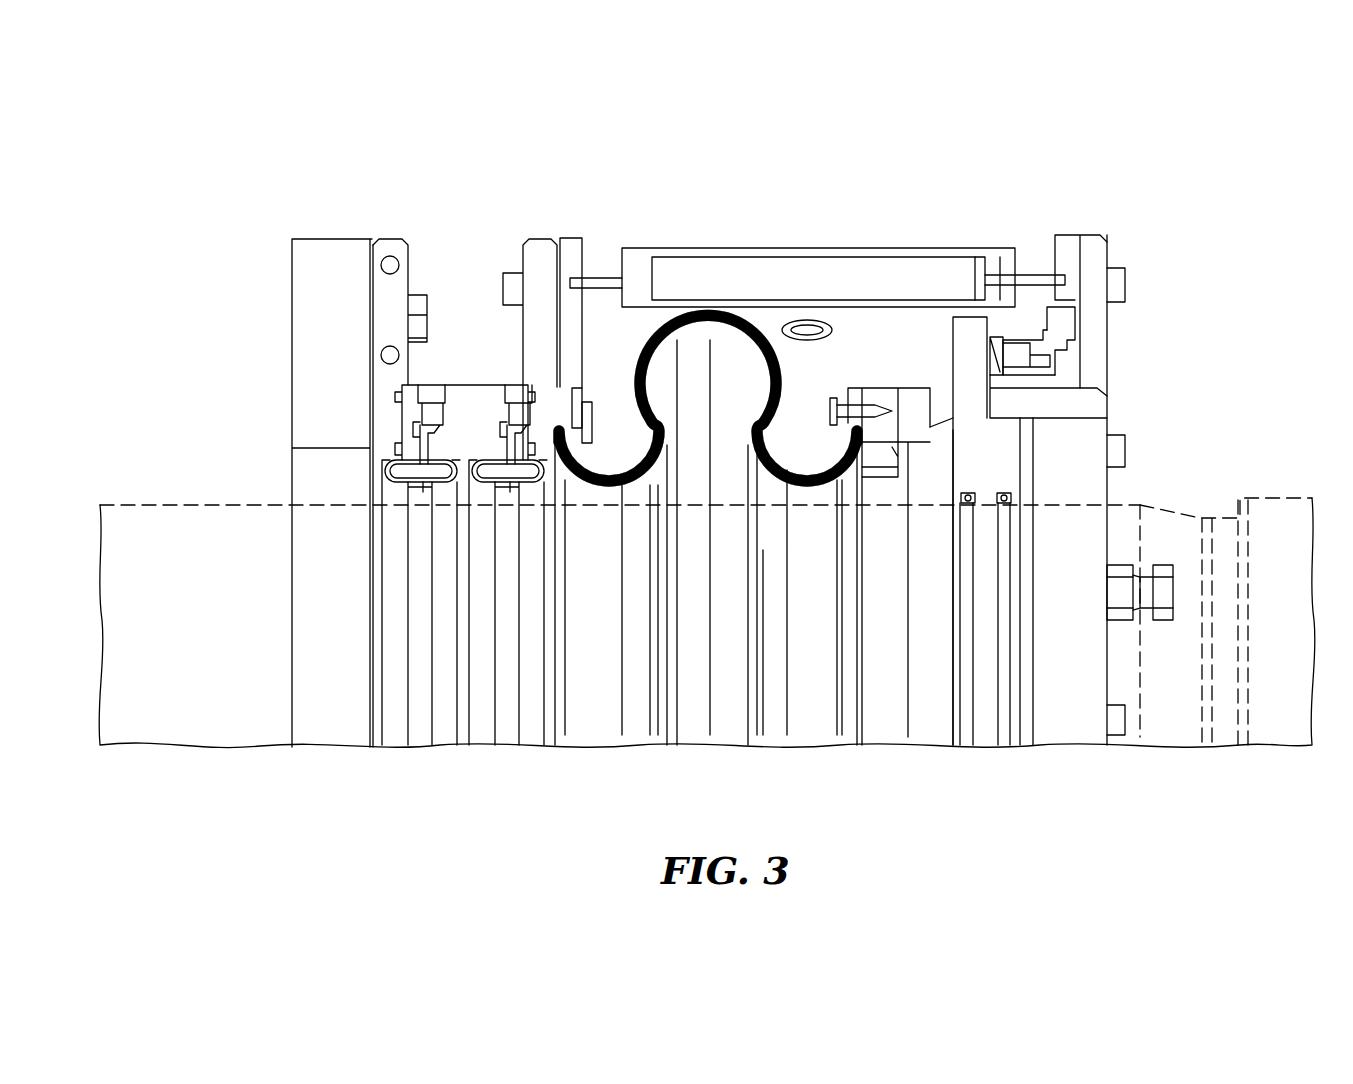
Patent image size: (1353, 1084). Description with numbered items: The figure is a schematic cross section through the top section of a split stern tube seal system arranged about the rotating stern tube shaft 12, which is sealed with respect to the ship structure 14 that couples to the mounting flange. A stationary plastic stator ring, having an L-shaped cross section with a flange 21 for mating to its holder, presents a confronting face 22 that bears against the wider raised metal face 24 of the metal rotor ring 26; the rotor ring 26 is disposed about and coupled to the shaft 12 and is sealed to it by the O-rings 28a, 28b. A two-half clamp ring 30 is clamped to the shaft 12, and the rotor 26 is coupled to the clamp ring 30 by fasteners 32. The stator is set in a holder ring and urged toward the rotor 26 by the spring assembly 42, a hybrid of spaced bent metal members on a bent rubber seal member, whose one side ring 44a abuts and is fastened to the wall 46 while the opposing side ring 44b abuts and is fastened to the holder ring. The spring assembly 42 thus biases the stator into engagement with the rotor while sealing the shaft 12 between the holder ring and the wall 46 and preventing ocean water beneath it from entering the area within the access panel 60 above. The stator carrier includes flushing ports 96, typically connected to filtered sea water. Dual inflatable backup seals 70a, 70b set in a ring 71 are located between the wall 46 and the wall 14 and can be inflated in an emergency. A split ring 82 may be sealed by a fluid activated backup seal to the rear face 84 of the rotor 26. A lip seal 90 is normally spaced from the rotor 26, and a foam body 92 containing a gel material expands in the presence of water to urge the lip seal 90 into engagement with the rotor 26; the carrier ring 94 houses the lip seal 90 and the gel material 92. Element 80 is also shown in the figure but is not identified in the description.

The stern tube shaft 12 is at (1193, 522).
The structure 14 is at (391, 245).
The flange 21 is at (913, 403).
The face 22 is at (947, 430).
The raised metal face 24 is at (948, 392).
The rotor ring 26 is at (1007, 465).
The O-ring 28a is at (966, 505).
The O-ring 28b is at (1004, 505).
The clamp ring 30 is at (937, 395).
The fasteners 32 is at (1163, 620).
The spring assembly 42 is at (618, 470).
The side ring 44a is at (583, 398).
The side ring 44b is at (842, 407).
The wall 46 is at (542, 250).
The access panel 60 is at (776, 252).
The inflatable backup seal 70a is at (425, 490).
The inflatable backup seal 70b is at (510, 490).
The ring 71 is at (460, 412).
The rod 80 is at (1058, 300).
The split ring 82 is at (1095, 248).
The rear face 84 is at (991, 338).
The lip seal 90 is at (1003, 345).
The foam body 92 is at (1016, 355).
The carrier ring 94 is at (1070, 325).
The flushing ports 96 is at (887, 478).